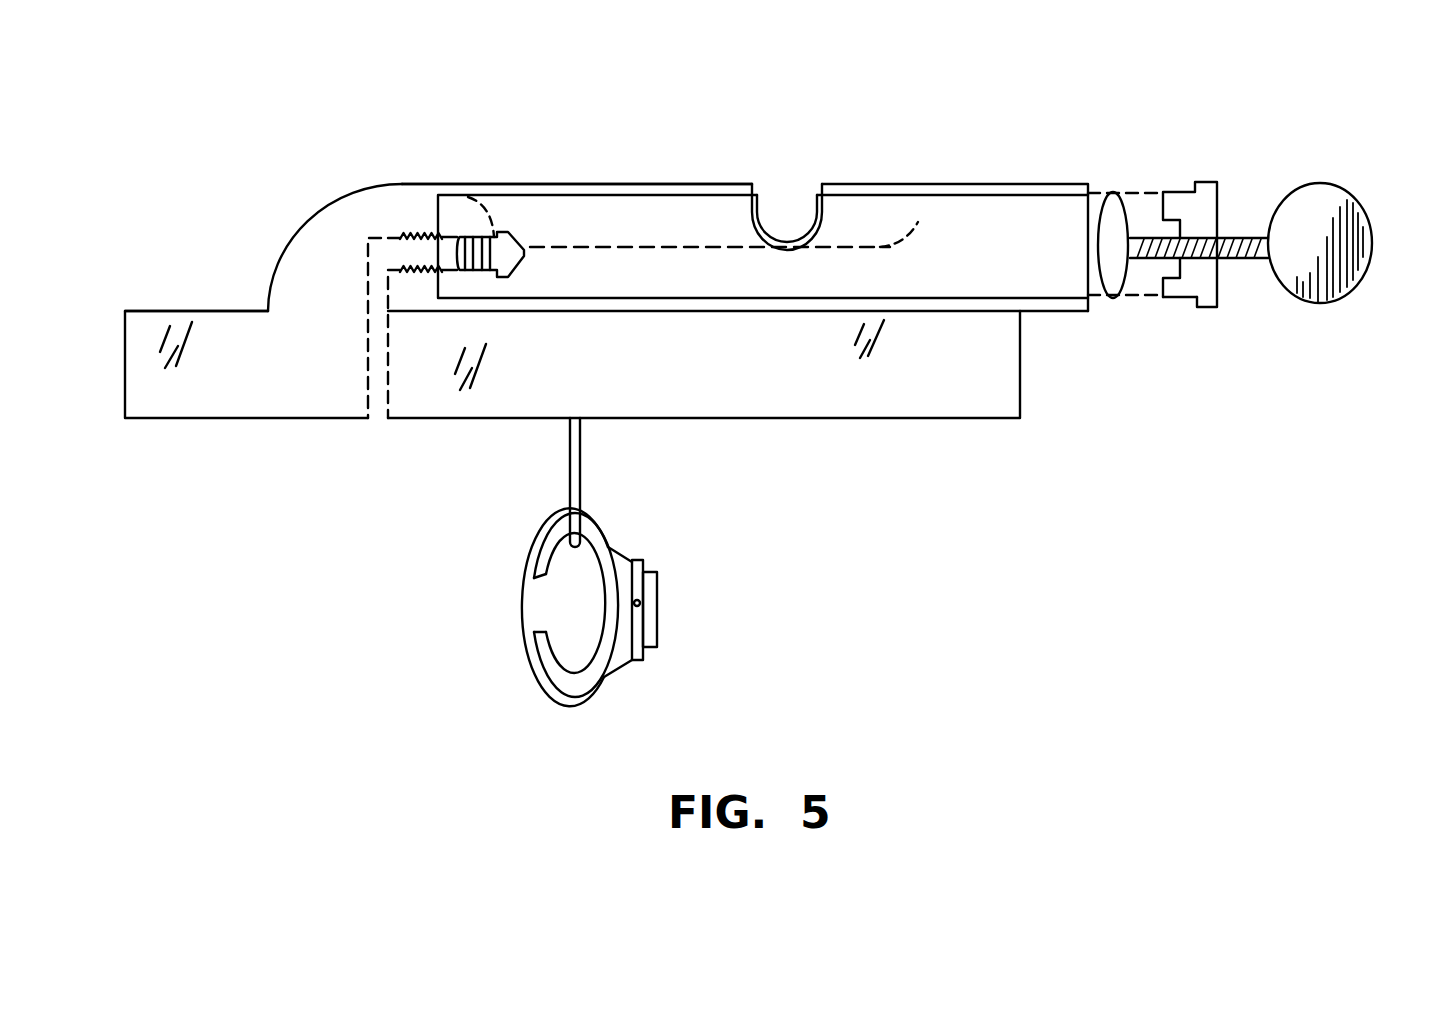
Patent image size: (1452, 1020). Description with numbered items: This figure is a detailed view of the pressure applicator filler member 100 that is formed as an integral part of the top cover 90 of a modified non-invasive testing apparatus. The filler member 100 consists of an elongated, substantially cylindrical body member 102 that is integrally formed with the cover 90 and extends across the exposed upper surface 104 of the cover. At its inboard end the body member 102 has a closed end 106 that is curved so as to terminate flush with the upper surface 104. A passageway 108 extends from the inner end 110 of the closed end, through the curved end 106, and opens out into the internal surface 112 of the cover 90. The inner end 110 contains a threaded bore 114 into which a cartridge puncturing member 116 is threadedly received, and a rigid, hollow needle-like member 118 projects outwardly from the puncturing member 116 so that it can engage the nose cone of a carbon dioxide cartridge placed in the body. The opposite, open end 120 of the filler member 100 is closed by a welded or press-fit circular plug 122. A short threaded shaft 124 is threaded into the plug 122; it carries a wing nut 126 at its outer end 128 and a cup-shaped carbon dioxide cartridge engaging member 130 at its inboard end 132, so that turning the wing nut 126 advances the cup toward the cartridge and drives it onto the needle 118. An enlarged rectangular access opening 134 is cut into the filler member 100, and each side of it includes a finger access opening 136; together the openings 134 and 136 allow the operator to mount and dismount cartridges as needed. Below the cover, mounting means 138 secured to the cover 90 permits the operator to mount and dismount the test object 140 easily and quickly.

The top cover 90 is at (1022, 403).
The pressure applicator filler member 100 is at (372, 137).
The elongated substantially cylindrical body member 102 is at (413, 208).
The exposed upper surface 104 is at (168, 311).
The inboard closed end 106 is at (328, 235).
The passageway 108 is at (378, 410).
The inner end 110 is at (443, 218).
The internal surface 112 is at (486, 420).
The threaded bore 114 is at (406, 232).
The cartridge puncturing member 116 is at (524, 239).
The rigid hollow needle-like member 118 is at (525, 253).
The open end 120 is at (1104, 187).
The circular plug 122 is at (1189, 212).
The short threaded shaft 124 is at (1244, 237).
The wing nut 126 is at (1323, 186).
The outer end 128 is at (1246, 262).
The cup shaped carbon dioxide cartridge engaging member 130 is at (1105, 293).
The inboard end 132 is at (1148, 292).
The enlarged rectangular access opening 134 is at (918, 213).
The finger access opening 136 is at (810, 196).
The mounting means 138 is at (580, 477).
The test object 140 is at (650, 573).